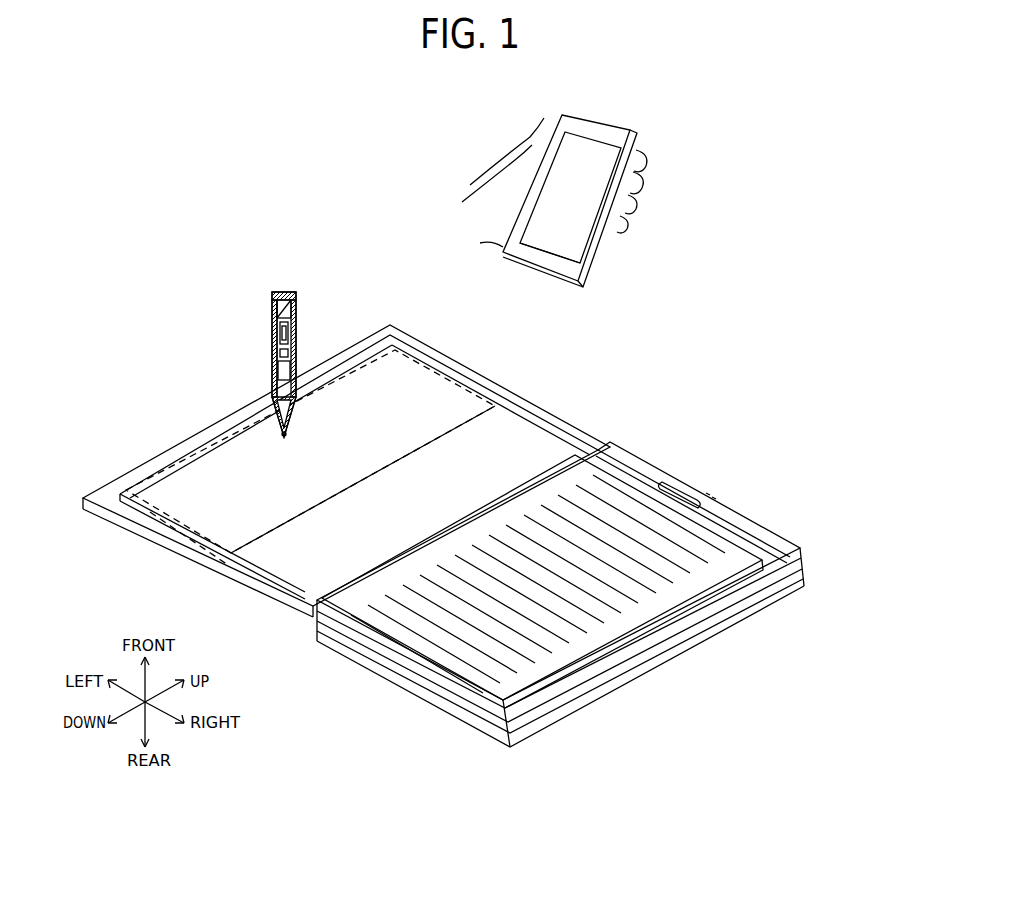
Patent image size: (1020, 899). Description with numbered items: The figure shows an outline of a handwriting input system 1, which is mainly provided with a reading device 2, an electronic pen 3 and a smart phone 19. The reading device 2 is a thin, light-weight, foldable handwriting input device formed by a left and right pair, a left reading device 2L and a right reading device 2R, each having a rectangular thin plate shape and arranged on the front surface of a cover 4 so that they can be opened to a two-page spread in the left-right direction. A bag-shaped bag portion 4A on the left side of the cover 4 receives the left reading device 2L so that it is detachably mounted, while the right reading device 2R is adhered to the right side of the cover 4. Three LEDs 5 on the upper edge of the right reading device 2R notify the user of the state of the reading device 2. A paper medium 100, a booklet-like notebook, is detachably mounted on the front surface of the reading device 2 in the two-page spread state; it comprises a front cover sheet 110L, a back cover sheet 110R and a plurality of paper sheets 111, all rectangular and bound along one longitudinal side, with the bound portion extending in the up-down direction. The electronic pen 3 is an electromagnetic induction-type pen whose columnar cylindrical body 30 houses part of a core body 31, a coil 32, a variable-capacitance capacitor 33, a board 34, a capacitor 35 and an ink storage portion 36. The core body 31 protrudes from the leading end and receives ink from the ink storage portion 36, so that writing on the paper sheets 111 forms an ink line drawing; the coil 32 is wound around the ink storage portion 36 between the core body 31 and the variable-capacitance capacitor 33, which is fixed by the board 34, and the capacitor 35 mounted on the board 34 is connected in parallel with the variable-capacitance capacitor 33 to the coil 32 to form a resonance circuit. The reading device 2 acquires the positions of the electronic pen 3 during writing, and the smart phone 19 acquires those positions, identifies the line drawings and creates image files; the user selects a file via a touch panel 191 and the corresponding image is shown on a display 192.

The handwriting input system 1 is at (797, 198).
The reading device 2 is at (648, 458).
The left reading device 2L is at (248, 576).
The right reading device 2R is at (440, 687).
The electronic pen 3 is at (287, 326).
The cover 4 is at (455, 360).
The bag portion 4A is at (203, 480).
The LEDs 5 is at (702, 492).
The smart phone 19 is at (650, 148).
The cylindrical body 30 is at (300, 296).
The core body 31 is at (288, 433).
The coil 32 is at (297, 402).
The variable-capacitance capacitor 33 is at (270, 325).
The board 34 is at (293, 310).
The capacitor 35 is at (290, 332).
The ink storage portion 36 is at (268, 380).
The paper medium 100 is at (692, 562).
The front cover sheet 110L is at (557, 416).
The back cover sheet 110R is at (750, 597).
The paper sheets 111 is at (378, 608).
The touch panel 191 is at (592, 141).
The display 192 is at (592, 256).